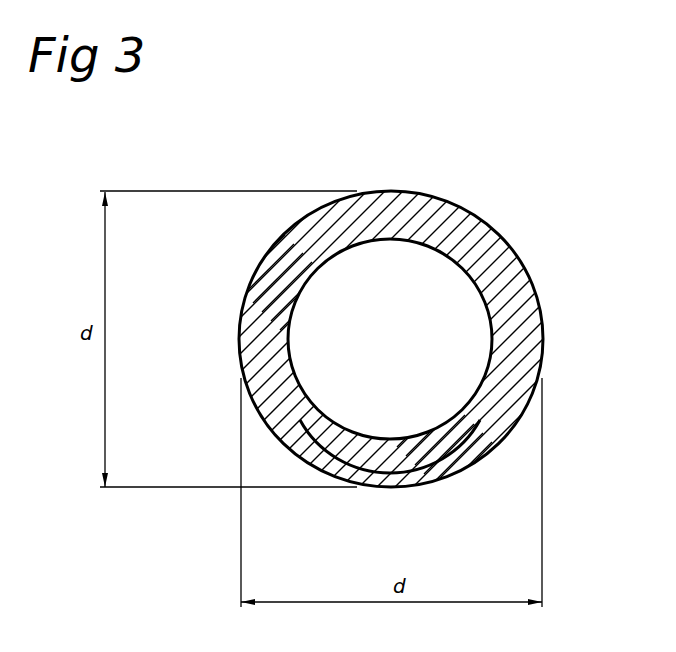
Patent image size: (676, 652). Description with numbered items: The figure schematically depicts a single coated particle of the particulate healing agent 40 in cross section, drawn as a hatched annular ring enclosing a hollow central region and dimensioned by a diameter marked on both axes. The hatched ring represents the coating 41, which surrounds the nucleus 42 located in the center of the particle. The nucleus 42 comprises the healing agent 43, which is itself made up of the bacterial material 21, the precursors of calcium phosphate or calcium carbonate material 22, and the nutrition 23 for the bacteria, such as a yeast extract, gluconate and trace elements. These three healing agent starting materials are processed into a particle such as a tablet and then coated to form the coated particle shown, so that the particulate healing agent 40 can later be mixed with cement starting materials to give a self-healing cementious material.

The bacterial material 21 is at (390, 286).
The calcium phosphate and/or calcium carbonate precursor material 22 is at (390, 286).
The nutrition for the bacteria 23 is at (393, 275).
The particulate healing agent 40 is at (505, 233).
The coating 41 is at (511, 354).
The nucleus 42 is at (428, 392).
The healing agent 43 is at (405, 410).